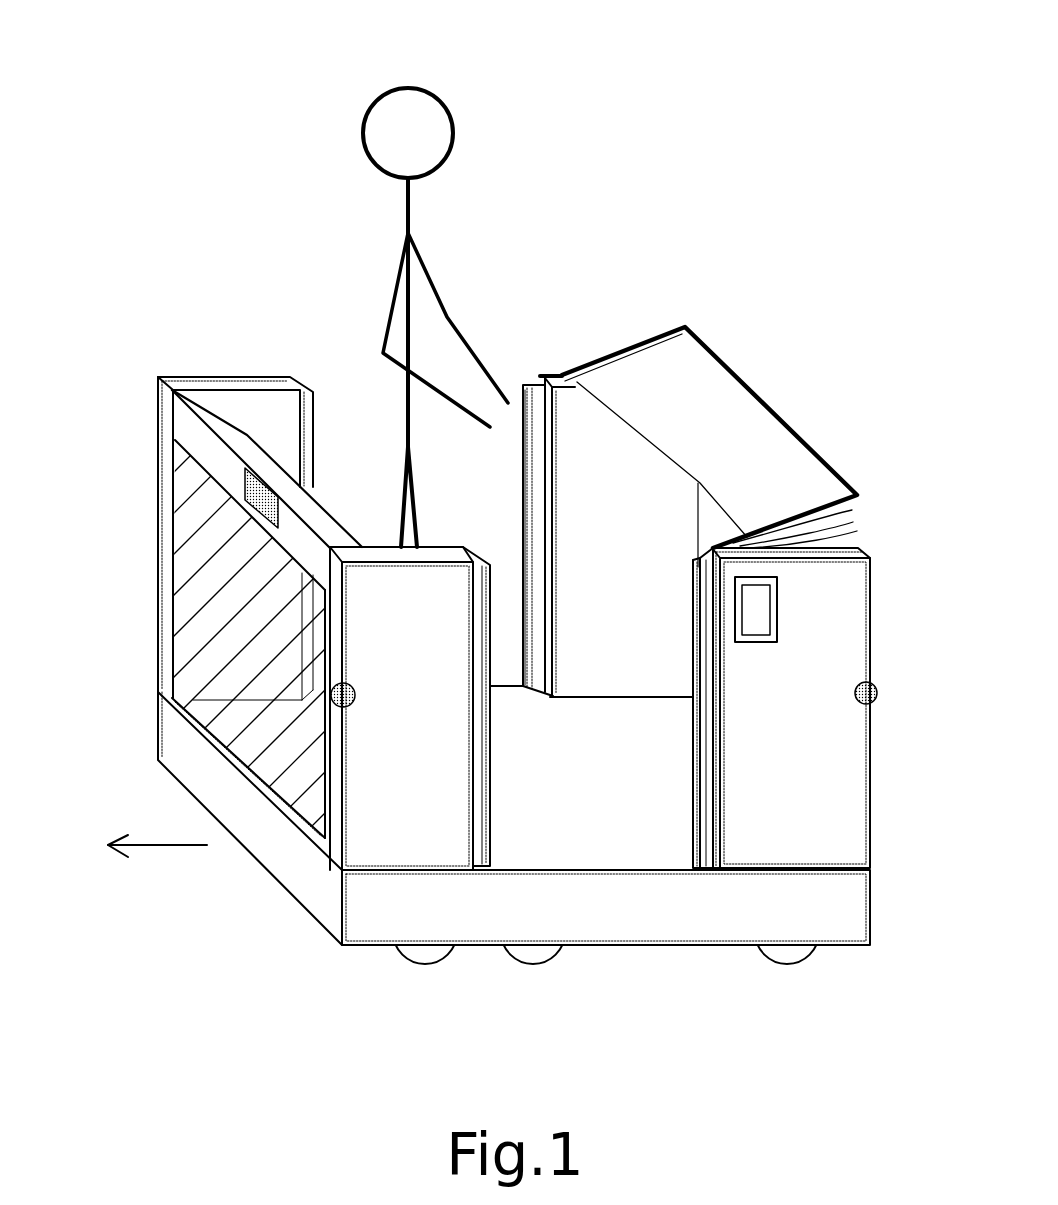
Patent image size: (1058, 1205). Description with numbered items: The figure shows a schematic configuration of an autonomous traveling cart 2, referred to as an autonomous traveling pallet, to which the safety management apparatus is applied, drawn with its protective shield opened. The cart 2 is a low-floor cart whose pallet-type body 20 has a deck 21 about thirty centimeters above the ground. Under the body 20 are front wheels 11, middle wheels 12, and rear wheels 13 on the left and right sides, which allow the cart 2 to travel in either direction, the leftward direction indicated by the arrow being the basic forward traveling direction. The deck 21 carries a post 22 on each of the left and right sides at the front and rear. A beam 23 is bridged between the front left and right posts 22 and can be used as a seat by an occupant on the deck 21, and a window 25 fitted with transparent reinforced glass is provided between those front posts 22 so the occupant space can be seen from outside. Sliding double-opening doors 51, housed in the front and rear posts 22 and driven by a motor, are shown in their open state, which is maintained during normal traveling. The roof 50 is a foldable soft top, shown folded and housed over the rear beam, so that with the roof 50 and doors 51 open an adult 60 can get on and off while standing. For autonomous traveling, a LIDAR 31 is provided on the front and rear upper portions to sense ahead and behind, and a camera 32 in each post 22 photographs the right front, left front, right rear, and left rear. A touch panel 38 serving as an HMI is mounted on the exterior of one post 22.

The autonomous traveling cart 2 is at (238, 345).
The front wheels 11 is at (418, 967).
The middle wheels 12 is at (525, 967).
The rear wheels 13 is at (782, 967).
The body 20 is at (173, 743).
The deck 21 is at (545, 828).
The post 22 is at (160, 600).
The beam 23 is at (335, 520).
The window 25 is at (188, 648).
The LIDAR 31 is at (247, 470).
The camera 32 is at (341, 706).
The touch panel 38 is at (778, 612).
The roof 50 is at (755, 392).
The door 51 is at (320, 445).
The adult 60 is at (362, 112).